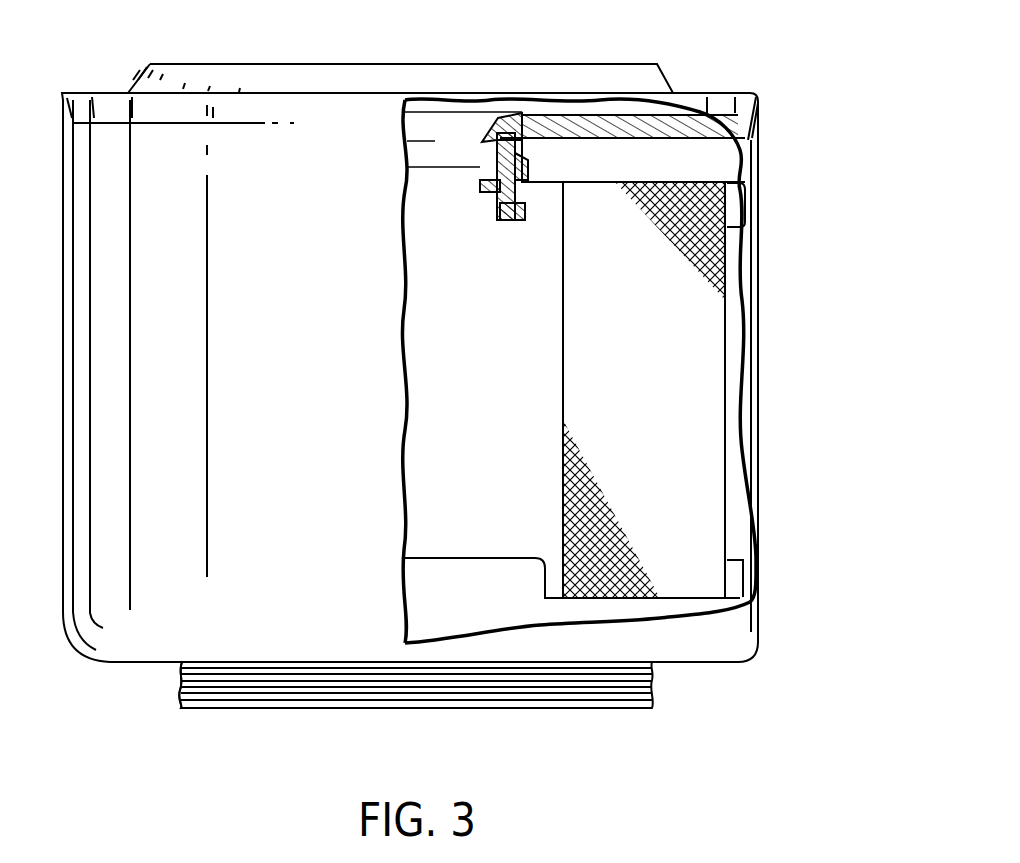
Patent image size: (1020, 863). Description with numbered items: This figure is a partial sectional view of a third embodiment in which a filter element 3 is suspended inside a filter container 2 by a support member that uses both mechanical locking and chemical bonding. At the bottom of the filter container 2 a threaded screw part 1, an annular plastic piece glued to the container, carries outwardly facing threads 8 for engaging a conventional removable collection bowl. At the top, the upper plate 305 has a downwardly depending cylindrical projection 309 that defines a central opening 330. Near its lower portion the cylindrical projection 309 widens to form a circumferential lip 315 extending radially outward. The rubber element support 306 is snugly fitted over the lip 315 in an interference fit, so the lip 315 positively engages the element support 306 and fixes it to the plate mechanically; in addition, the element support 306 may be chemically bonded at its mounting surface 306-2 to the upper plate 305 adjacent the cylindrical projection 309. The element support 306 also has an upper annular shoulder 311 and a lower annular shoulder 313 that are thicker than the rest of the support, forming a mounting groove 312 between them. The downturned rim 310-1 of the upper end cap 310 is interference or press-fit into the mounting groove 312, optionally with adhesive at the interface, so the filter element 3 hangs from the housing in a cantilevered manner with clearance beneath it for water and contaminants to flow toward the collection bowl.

The threaded screw part 1 is at (613, 708).
The filter container 2 is at (760, 343).
The filter element 3 is at (700, 436).
The outwardly facing threads 8 is at (177, 690).
The upper plate 305 is at (667, 125).
The element support 306 is at (530, 157).
The mounting surface 306-2 is at (523, 113).
The cylindrical projection 309 is at (482, 142).
The upper end cap 310 is at (738, 155).
The downturned rim 310-1 is at (563, 183).
The upper annular shoulder 311 is at (535, 172).
The mounting groove 312 is at (523, 200).
The lower annular shoulder 313 is at (507, 222).
The circumferential lip 315 is at (480, 143).
The central opening 330 is at (407, 141).